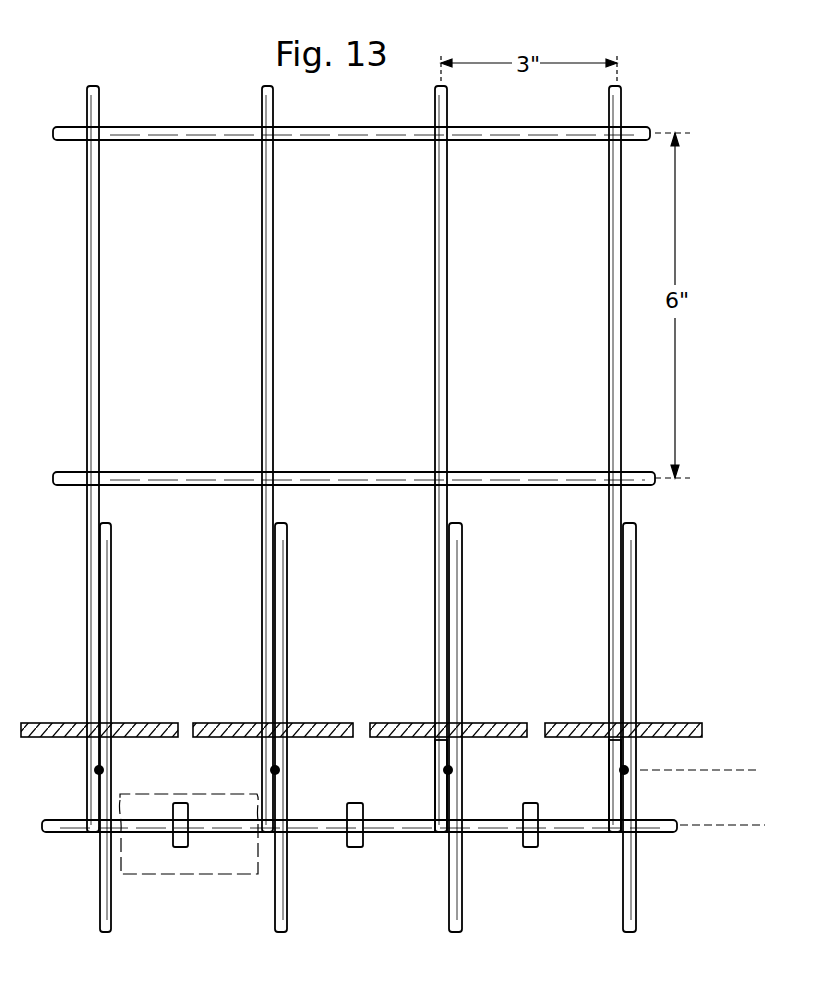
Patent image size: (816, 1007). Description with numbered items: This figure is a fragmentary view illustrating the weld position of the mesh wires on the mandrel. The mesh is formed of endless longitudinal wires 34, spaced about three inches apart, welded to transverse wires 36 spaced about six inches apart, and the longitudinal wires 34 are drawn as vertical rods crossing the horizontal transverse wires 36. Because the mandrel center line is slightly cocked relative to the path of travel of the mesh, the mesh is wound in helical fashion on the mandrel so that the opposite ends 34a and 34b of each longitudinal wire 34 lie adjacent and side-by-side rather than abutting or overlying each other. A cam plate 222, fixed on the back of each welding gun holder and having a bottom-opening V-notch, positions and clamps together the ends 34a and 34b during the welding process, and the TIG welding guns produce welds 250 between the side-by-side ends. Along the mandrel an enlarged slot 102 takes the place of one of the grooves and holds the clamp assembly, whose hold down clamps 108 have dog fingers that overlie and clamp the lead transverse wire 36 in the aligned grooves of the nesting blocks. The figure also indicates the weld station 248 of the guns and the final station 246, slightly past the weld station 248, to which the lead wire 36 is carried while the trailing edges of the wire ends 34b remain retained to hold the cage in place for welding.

The longitudinal wires 34 is at (612, 295).
The wire end 34a is at (441, 792).
The wire end 34b is at (457, 797).
The transverse wires 36 is at (566, 127).
The cam plate 222 is at (210, 723).
The welds 250 is at (275, 770).
The hold down clamps 108 is at (173, 843).
The enlarged slot 102 is at (200, 875).
The weld station 248 is at (745, 770).
The final station 246 is at (740, 825).